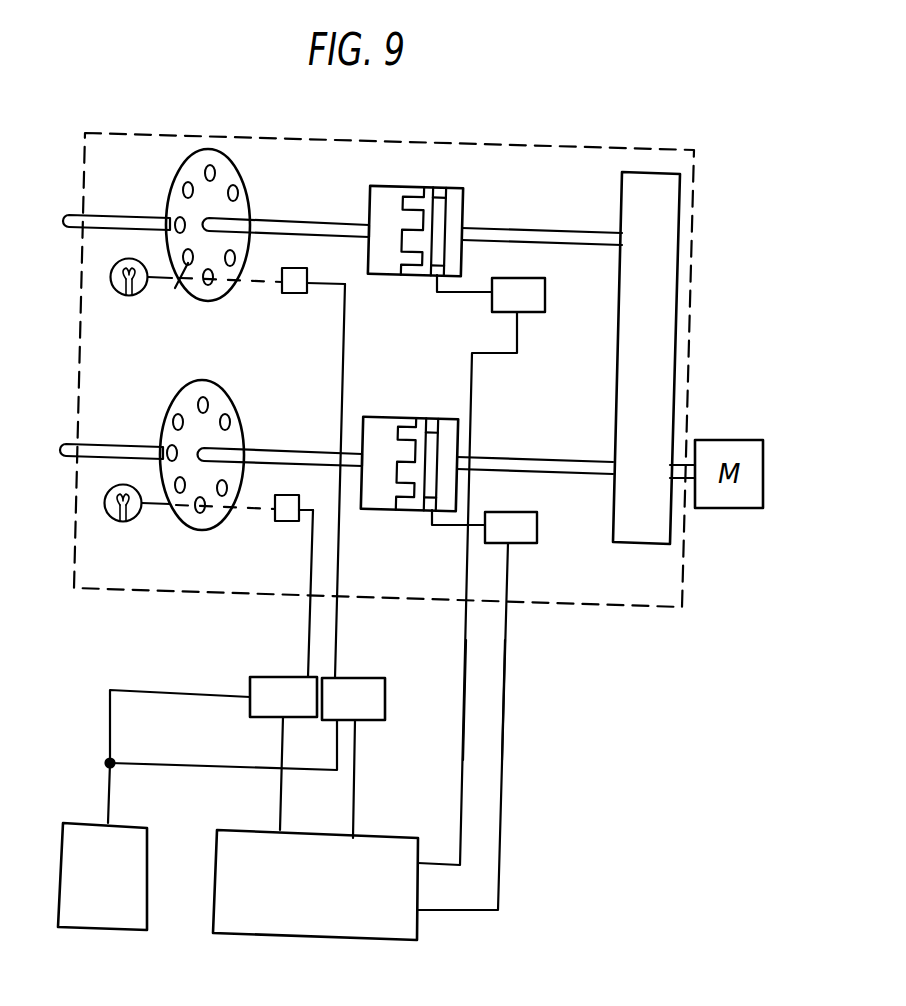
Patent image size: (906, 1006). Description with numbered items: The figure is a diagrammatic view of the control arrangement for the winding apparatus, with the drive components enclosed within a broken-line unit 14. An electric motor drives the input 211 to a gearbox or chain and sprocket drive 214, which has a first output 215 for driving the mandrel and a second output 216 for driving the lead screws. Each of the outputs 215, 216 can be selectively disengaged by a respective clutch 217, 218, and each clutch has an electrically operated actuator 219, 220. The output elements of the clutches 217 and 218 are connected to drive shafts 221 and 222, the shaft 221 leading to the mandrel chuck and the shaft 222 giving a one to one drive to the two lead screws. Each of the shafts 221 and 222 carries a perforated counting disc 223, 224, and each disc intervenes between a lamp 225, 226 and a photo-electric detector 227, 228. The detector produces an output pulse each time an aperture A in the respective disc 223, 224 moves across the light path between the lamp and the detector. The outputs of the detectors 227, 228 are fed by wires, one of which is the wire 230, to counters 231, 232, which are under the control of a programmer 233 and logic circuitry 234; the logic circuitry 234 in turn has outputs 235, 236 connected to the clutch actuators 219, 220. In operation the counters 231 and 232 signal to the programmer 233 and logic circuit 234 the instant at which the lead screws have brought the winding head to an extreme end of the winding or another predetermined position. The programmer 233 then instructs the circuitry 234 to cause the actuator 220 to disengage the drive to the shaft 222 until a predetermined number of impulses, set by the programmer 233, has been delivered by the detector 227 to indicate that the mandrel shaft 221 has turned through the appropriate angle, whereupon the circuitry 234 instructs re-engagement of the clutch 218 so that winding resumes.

The drive unit housing 14 is at (662, 612).
The input 211 is at (679, 469).
The gearbox or chain and sprocket drive 214 is at (652, 183).
The first output 215 is at (535, 235).
The second output 216 is at (532, 463).
The clutch 217 is at (398, 183).
The clutch 218 is at (395, 411).
The electrically operated actuator 219 is at (545, 312).
The electrically operated actuator 220 is at (530, 536).
The drive shaft 221 is at (118, 218).
The drive shaft 222 is at (117, 450).
The perforated counting disc 223 is at (228, 166).
The perforated counting disc 224 is at (218, 403).
The lamp 225 is at (118, 298).
The lamp 226 is at (127, 522).
The photo-electric detector 227 is at (293, 297).
The photo-electric detector 228 is at (283, 523).
The wire 230 is at (309, 620).
The counter 231 is at (252, 675).
The counter 232 is at (385, 680).
The programmer 233 is at (85, 933).
The logic circuitry 234 is at (307, 938).
The output 235 is at (461, 795).
The output 236 is at (500, 798).
The aperture A is at (174, 294).